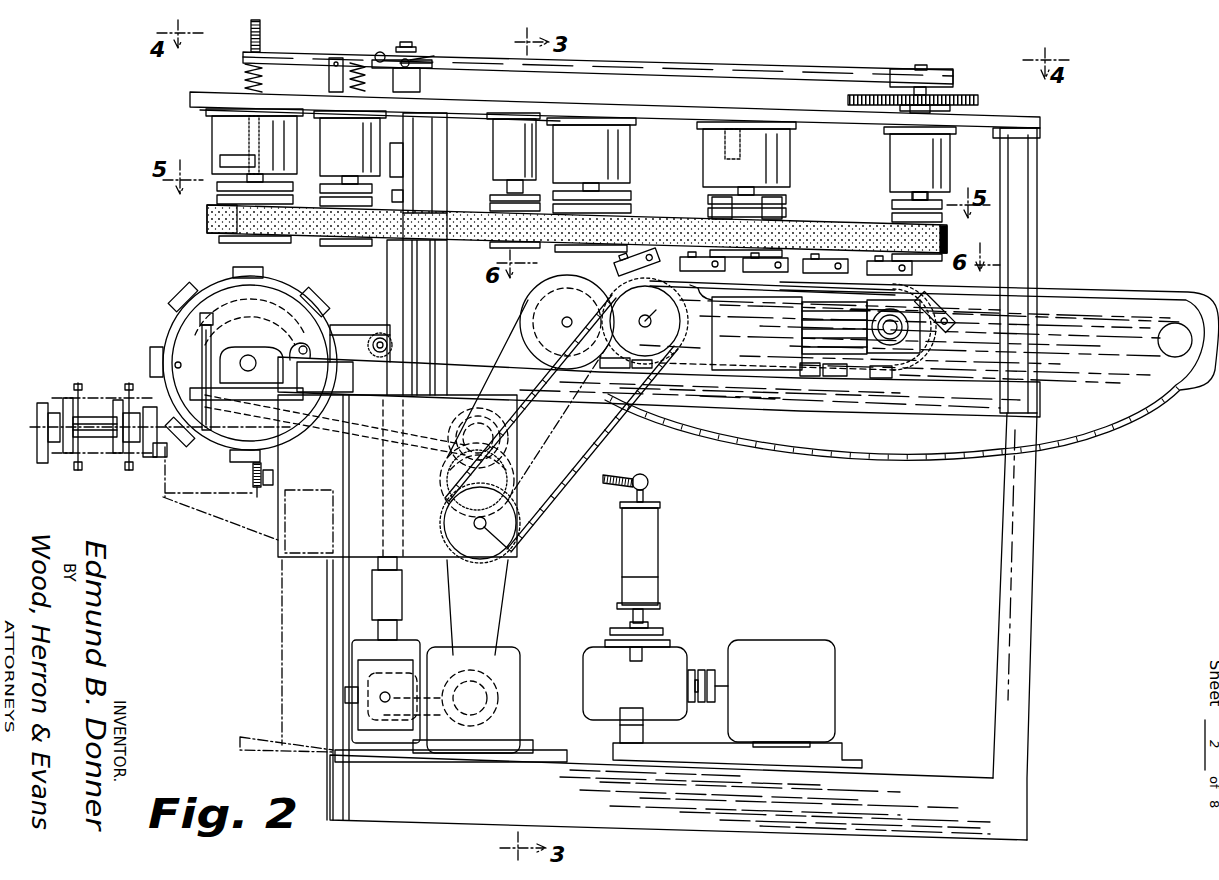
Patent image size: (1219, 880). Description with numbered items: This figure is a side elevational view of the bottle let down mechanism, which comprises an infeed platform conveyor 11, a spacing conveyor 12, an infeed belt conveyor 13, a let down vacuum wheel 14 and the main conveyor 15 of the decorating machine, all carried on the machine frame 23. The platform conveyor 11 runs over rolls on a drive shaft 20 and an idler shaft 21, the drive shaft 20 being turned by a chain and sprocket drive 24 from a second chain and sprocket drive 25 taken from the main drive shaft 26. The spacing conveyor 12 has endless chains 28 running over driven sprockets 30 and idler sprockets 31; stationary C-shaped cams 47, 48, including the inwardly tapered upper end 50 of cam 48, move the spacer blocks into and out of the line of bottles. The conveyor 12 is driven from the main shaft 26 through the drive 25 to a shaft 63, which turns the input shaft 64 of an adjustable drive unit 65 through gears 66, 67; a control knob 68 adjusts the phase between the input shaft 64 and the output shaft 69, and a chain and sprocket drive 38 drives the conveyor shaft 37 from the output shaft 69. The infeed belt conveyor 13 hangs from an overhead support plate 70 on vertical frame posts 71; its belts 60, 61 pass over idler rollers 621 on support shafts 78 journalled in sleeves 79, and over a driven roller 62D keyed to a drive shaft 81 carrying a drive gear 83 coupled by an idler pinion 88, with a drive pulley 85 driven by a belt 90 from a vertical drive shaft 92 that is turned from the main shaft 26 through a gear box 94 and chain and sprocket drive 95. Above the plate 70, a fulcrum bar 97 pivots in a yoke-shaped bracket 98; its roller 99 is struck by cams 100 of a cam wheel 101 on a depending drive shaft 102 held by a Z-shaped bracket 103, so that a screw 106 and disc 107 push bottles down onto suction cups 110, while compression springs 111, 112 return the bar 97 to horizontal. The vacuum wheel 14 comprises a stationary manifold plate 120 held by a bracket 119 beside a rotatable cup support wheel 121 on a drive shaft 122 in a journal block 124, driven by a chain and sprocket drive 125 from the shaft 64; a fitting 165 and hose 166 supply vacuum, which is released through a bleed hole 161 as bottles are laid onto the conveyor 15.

The infeed platform conveyor 11 is at (1130, 432).
The spacing conveyor 12 is at (607, 267).
The infeed belt conveyor 13 is at (192, 220).
The let down vacuum wheel 14 is at (226, 368).
The main conveyor 15 is at (104, 384).
The drive shaft 20 is at (561, 323).
The idler shaft 21 is at (1176, 331).
The machine frame 23 is at (1048, 511).
The chain and sprocket drive 24 is at (518, 346).
The chain and sprocket drive 25 is at (510, 600).
The main drive shaft 26 is at (470, 715).
The endless chain 28 is at (820, 377).
The sprockets 30 is at (700, 327).
The idler sprockets 31 is at (812, 329).
The drive shaft 37 is at (650, 318).
The chain and sprocket drive 38 is at (598, 440).
The stationary cam 47 is at (935, 345).
The stationary cam 48 is at (620, 360).
The inwardly tapered upper end 50 is at (712, 308).
The belt 60 is at (463, 216).
The belt 61 is at (207, 216).
The shaft 63 is at (512, 472).
The input shaft 64 is at (518, 435).
The adjustable drive unit 65 is at (280, 560).
The gear 66 is at (455, 482).
The gear 67 is at (462, 430).
The control knob 68 is at (242, 497).
The output shaft 69 is at (518, 546).
The overhead support plate 70 is at (673, 110).
The vertical frame posts 71 is at (447, 152).
The vertical support shaft 78 is at (712, 194).
The supporting sleeve 79 is at (722, 139).
The drive shaft 81 is at (925, 68).
The drive gear 83 is at (978, 100).
The drive pulley 85 is at (897, 68).
The idler pinion 88 is at (848, 97).
The belt 90 is at (676, 62).
The drive shaft 92 is at (402, 600).
The gear box 94 is at (402, 648).
The chain and sprocket drive 95 is at (437, 720).
The fulcrum bar 97 is at (312, 52).
The yoke-shaped bracket 98 is at (329, 80).
The roller 99 is at (380, 52).
The cams 100 is at (430, 60).
The cam wheel 101 is at (432, 66).
The drive shaft 102 is at (410, 45).
The Z-shaped bracket 103 is at (420, 88).
The screw 106 is at (251, 33).
The disc 107 is at (226, 158).
The suction cups 110 is at (274, 275).
The compression spring 111 is at (358, 76).
The compression spring 112 is at (245, 78).
The bracket 119 is at (297, 349).
The stationary manifold plate 120 is at (284, 301).
The vacuum cup support wheel 121 is at (220, 283).
The drive shaft 122 is at (248, 355).
The frame journal block 124 is at (256, 396).
The chain and sprocket drive 125 is at (362, 326).
The bleed hole 161 is at (177, 362).
The fitting 165 is at (204, 320).
The hose 166 is at (193, 450).
The idler rollers 621 is at (213, 133).
The drive roller 62D is at (912, 220).